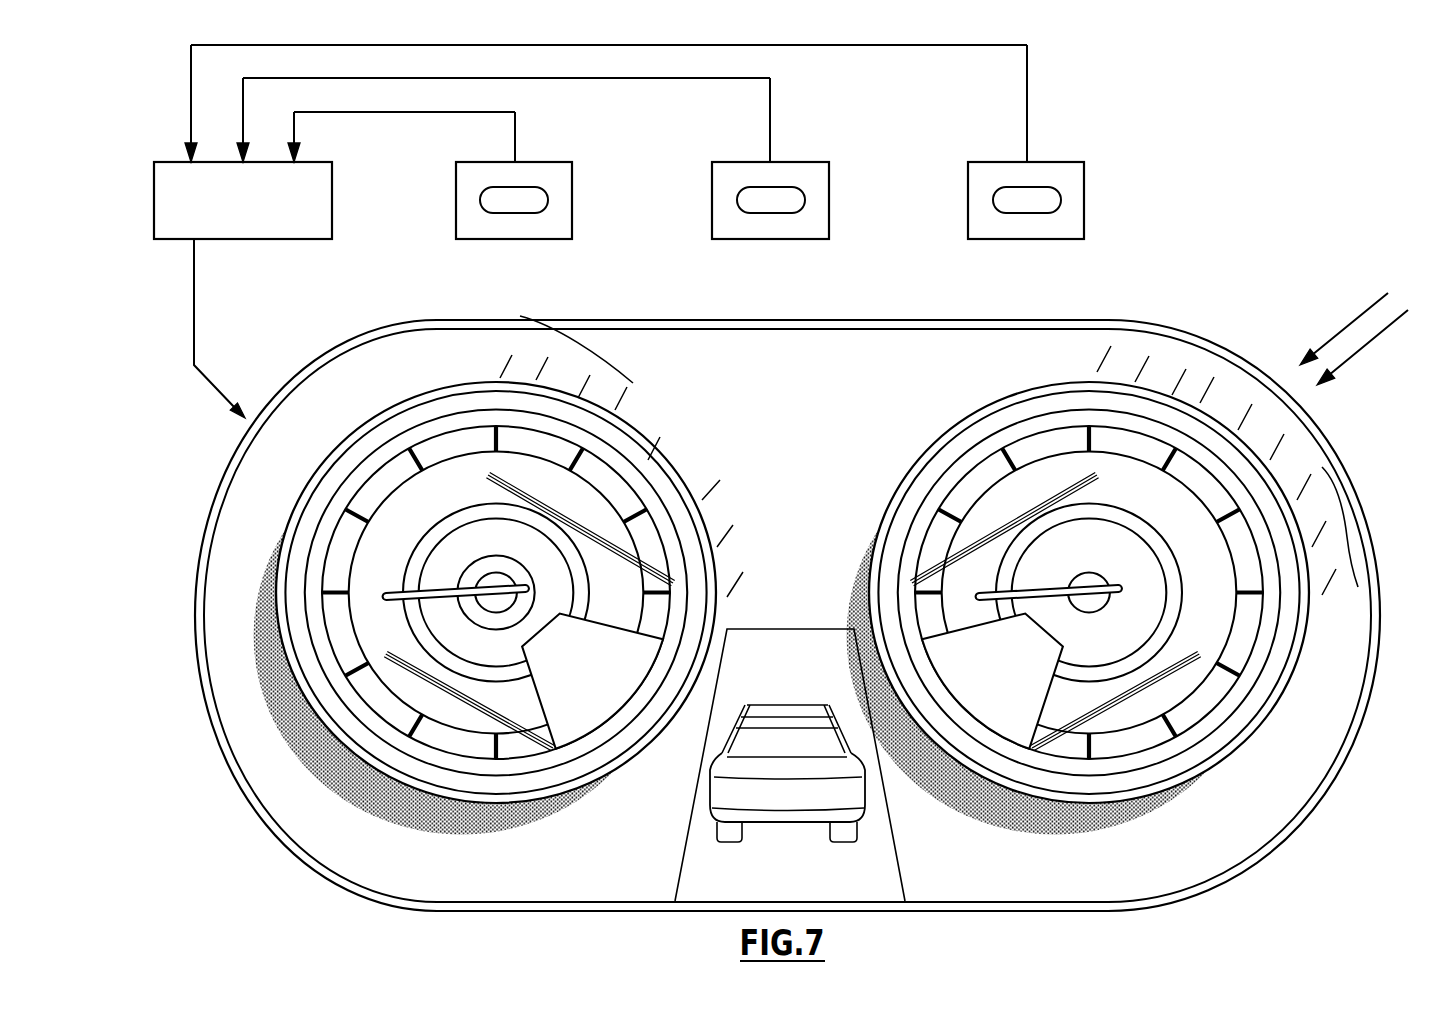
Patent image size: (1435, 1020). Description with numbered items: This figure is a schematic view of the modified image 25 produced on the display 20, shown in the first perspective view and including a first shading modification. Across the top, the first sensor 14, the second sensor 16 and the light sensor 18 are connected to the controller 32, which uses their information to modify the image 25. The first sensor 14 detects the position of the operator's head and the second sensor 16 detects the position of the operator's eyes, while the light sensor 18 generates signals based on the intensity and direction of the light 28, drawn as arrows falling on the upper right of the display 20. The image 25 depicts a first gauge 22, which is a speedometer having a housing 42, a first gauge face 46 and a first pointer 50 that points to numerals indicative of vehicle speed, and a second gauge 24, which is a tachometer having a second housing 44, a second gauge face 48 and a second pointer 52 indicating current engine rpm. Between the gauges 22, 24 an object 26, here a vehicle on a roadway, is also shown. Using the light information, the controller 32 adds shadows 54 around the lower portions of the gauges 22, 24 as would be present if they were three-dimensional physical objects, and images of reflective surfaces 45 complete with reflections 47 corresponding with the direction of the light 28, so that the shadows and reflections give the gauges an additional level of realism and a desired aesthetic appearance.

The first sensor 14 is at (523, 226).
The second sensor 16 is at (780, 226).
The light sensor 18 is at (1037, 226).
The display 20 is at (1257, 358).
The first gauge 22 is at (378, 776).
The second gauge 24 is at (1195, 782).
The image 25 is at (263, 579).
The object 26 is at (690, 788).
The light 28 is at (1358, 355).
The controller 32 is at (230, 227).
The housing 42 is at (640, 458).
The second housing 44 is at (1150, 408).
The reflective surfaces 45 is at (628, 400).
The first gauge face 46 is at (368, 627).
The reflections 47 is at (604, 348).
The second gauge face 48 is at (1218, 627).
The first pointer 50 is at (478, 556).
The second pointer 52 is at (1150, 662).
The shadows 54 is at (483, 822).